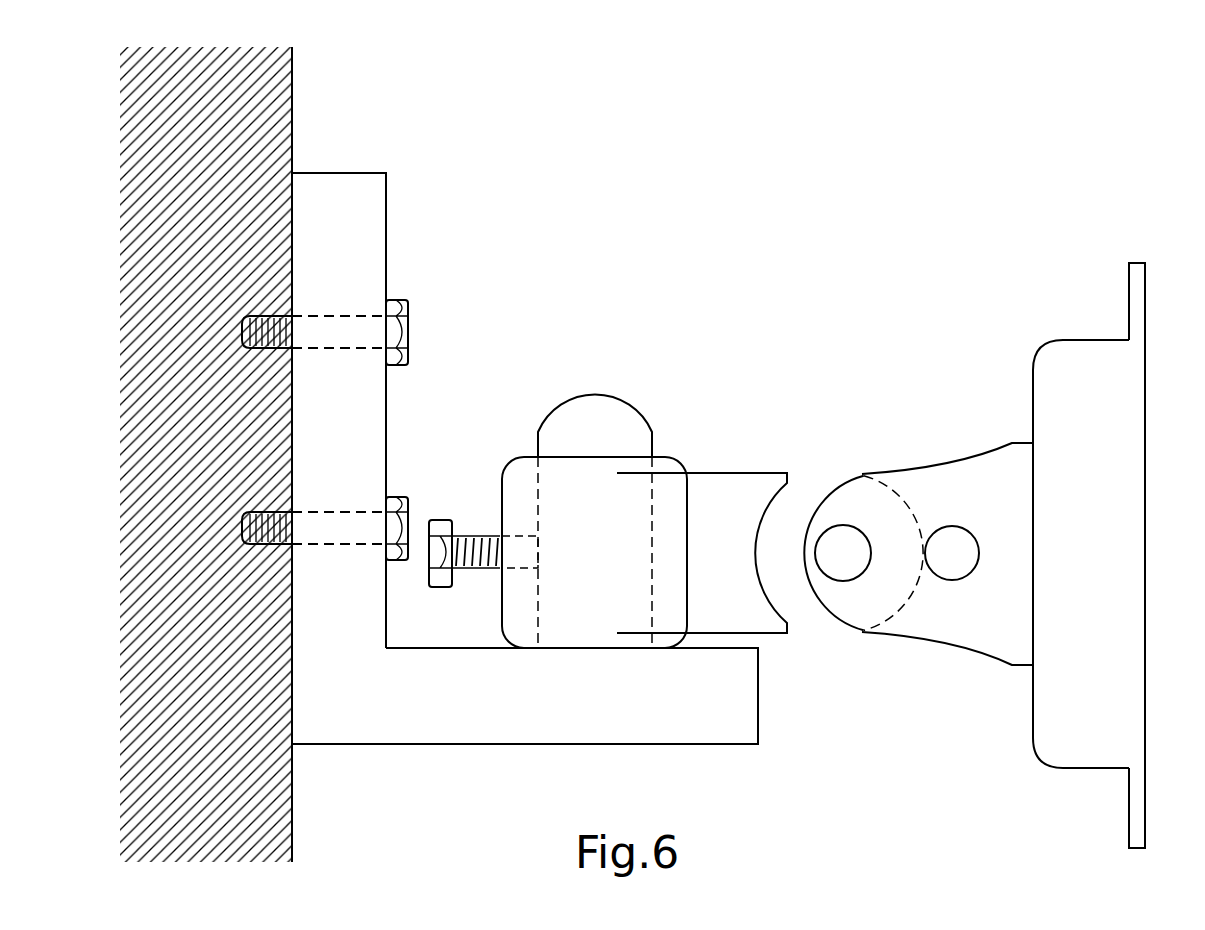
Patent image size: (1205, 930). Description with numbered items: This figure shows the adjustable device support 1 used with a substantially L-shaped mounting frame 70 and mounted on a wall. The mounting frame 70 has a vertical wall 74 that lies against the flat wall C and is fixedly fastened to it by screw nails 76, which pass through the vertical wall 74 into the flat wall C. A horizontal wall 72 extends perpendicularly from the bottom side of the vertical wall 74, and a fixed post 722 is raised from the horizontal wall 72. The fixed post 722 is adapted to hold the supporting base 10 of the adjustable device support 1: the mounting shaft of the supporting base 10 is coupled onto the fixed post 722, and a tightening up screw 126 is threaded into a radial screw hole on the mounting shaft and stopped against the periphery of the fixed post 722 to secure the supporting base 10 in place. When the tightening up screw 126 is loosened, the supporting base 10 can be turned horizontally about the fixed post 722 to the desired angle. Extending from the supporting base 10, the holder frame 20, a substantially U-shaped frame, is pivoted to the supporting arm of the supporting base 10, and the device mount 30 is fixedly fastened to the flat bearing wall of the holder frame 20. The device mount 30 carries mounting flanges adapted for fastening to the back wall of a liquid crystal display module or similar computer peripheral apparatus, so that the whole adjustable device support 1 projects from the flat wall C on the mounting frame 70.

The adjustable device support 1 is at (911, 554).
The supporting base 10 is at (773, 443).
The holder frame 20 is at (977, 423).
The device mount 30 is at (1122, 504).
The L-shaped mounting frame 70 is at (505, 435).
The horizontal wall 72 is at (710, 725).
The vertical wall 74 is at (378, 227).
The screw nails 76 is at (393, 493).
The tightening up screw 126 is at (440, 522).
The fixed post 722 is at (600, 422).
The flat wall C is at (291, 809).